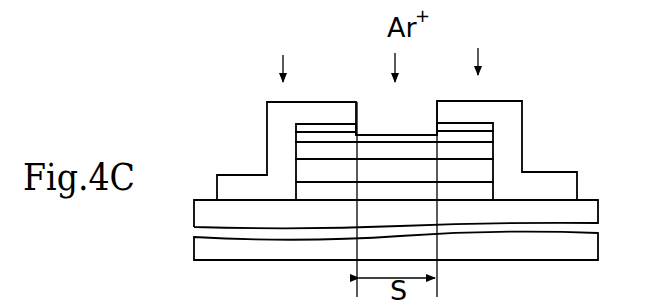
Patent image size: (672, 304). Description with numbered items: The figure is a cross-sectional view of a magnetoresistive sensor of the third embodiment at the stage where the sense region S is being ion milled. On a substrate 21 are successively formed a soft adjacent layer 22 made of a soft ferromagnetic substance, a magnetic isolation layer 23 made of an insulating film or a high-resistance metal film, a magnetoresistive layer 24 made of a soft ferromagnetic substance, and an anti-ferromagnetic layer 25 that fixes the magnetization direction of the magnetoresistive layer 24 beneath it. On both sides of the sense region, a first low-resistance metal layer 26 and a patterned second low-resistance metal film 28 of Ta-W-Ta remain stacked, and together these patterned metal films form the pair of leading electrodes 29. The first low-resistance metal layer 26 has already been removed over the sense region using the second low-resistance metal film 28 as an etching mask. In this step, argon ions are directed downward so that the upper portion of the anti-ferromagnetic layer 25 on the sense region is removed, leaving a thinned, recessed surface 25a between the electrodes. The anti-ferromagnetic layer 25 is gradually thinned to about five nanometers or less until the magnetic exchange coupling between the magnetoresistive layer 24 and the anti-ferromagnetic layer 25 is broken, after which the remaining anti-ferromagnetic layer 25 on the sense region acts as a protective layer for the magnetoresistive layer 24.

The substrate 21 is at (598, 245).
The soft adjacent layer 22 is at (487, 190).
The magnetic isolation layer 23 is at (307, 168).
The magnetoresistive layer 24 is at (305, 150).
The anti-ferromagnetic layer 25 is at (490, 136).
The etched surface of magnetoresistive layer 25a is at (380, 137).
The first low-resistance metal layer 26 is at (490, 127).
The second low-resistance metal film 28 is at (512, 108).
The leading electrodes 29 is at (432, 132).